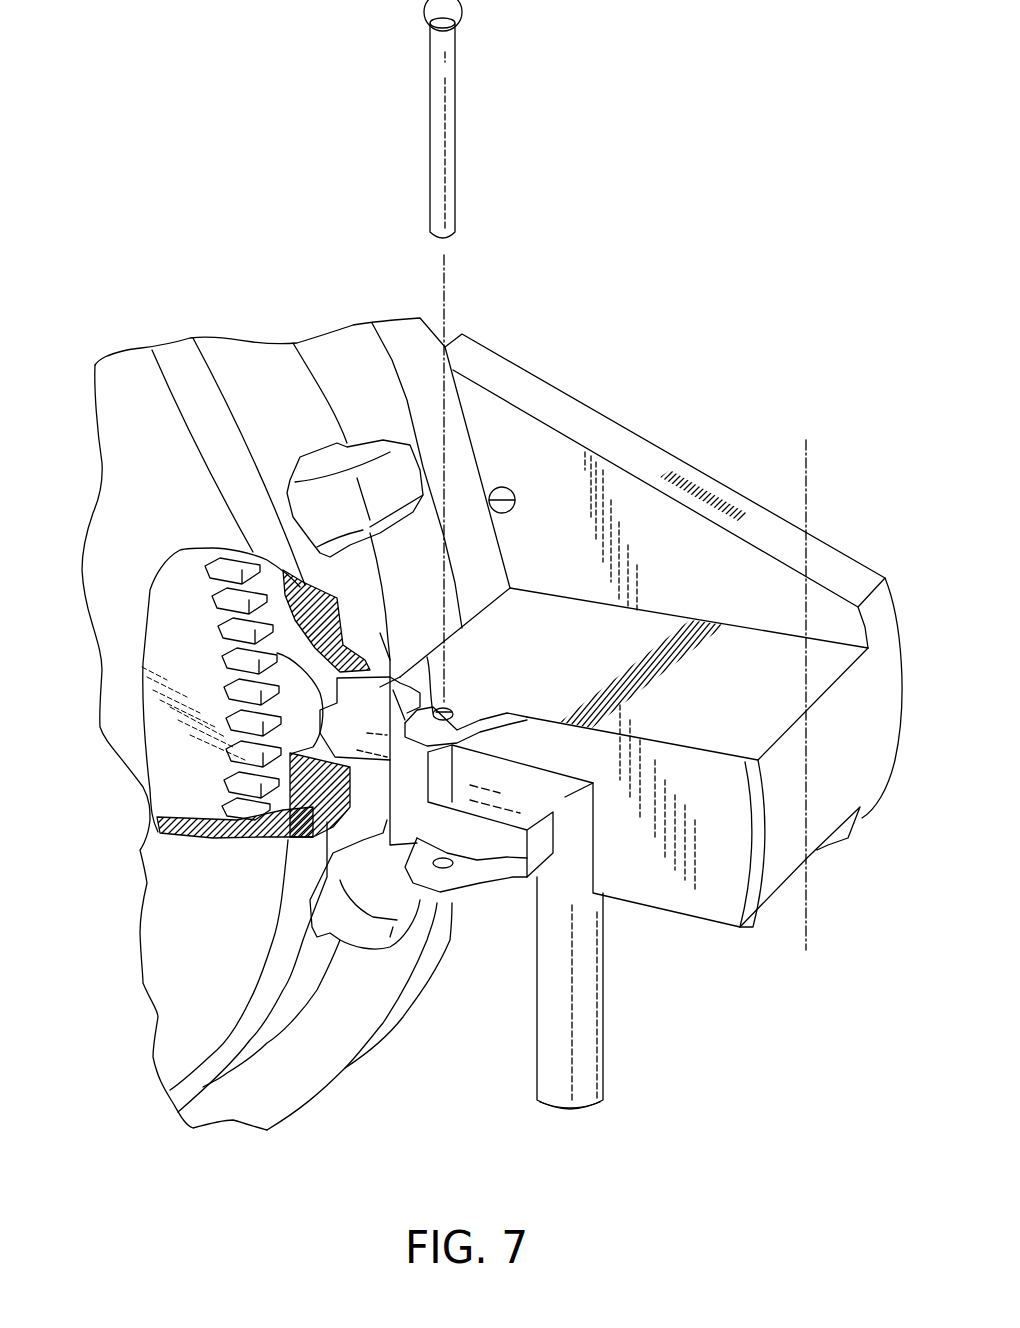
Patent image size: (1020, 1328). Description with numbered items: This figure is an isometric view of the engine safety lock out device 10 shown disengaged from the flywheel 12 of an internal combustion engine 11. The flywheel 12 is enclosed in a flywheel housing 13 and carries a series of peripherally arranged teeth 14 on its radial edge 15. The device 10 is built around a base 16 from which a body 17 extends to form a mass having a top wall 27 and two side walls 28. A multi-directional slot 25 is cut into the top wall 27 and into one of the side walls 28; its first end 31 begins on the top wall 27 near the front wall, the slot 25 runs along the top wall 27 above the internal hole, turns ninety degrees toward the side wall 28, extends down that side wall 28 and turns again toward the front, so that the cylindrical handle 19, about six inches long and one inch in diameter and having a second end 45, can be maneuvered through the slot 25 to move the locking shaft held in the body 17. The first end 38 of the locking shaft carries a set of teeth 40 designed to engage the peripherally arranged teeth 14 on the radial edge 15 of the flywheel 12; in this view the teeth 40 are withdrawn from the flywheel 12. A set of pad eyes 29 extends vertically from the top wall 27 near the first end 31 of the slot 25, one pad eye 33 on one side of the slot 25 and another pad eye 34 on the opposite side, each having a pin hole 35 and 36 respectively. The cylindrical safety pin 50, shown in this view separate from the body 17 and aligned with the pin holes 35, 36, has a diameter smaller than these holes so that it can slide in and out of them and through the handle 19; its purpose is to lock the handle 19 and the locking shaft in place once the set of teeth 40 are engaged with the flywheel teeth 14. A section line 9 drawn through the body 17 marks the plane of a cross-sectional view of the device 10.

The section line 9- 9 is at (838, 914).
The engine safety lock out device 10 is at (697, 387).
The internal combustion engine 11 is at (118, 900).
The flywheel 12 is at (188, 615).
The flywheel housing 13 is at (224, 959).
The peripherally arranged teeth 14 is at (227, 793).
The radial edge 15 is at (222, 813).
The base 16 is at (720, 582).
The body 17 is at (745, 706).
The handle 19 is at (607, 1042).
The multi-directional slot 25 is at (512, 777).
The top wall 27 is at (718, 837).
The side walls 28 is at (550, 691).
The set of pad eyes 29 is at (469, 816).
The first end 31 is at (392, 777).
The pad eye 33 is at (467, 713).
The pad eye 34 is at (440, 905).
The pin hole 35 is at (440, 713).
The pin hole 36 is at (407, 860).
The first end 38 is at (380, 670).
The set of teeth 40 is at (313, 837).
The second end 45 is at (577, 1113).
The safety pin 50 is at (455, 118).